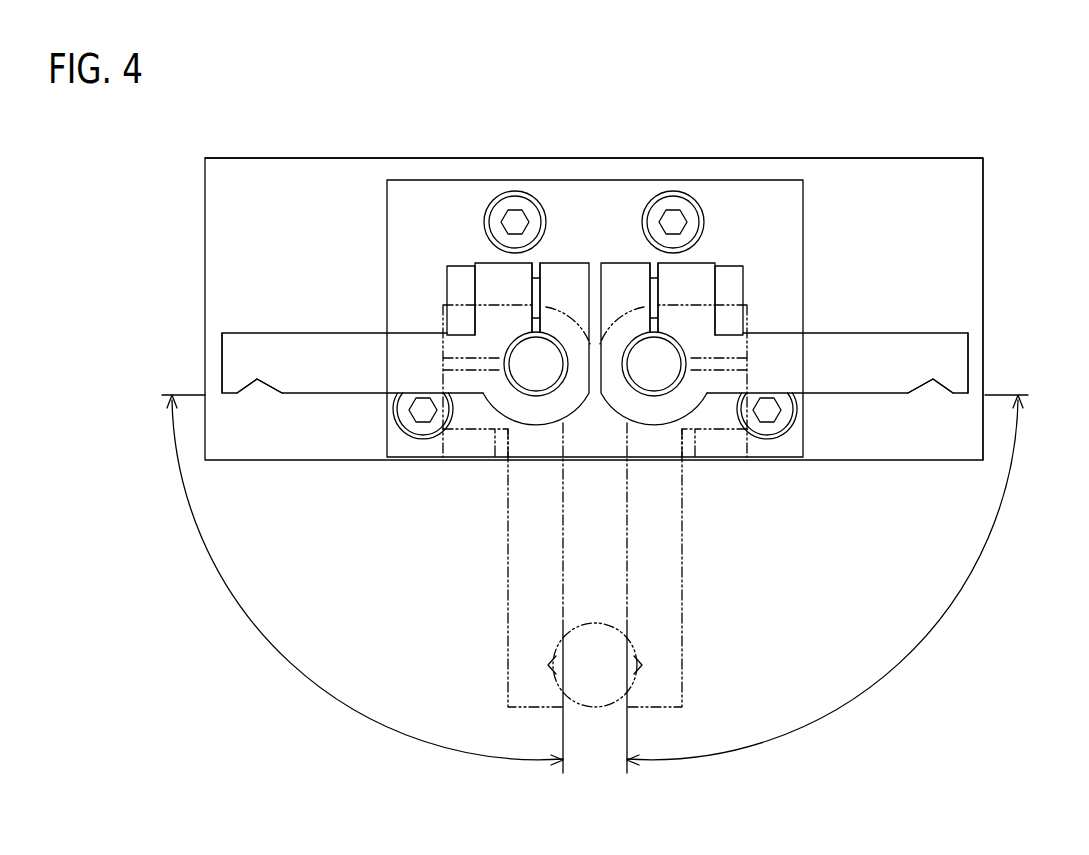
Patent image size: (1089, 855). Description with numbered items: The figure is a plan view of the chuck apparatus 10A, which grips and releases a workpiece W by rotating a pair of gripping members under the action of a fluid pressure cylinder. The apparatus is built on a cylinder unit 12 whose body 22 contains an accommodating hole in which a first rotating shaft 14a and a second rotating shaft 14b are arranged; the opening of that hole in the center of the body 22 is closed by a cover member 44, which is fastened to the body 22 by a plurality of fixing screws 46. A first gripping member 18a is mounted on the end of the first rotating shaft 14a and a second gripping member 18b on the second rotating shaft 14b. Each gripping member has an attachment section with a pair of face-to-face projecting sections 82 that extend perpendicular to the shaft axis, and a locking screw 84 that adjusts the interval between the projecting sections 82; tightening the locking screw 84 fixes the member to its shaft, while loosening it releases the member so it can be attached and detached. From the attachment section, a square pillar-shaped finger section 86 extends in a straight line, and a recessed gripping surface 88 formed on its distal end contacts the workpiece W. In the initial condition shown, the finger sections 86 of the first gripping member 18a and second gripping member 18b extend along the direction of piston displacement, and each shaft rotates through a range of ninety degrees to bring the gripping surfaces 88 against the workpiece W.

The chuck apparatus 10A is at (253, 106).
The cylinder unit 12 is at (914, 156).
The body 22 is at (868, 172).
The cover member 44 is at (769, 195).
The fixing screws 46 is at (672, 208).
The first rotating shaft 14a is at (650, 377).
The second rotating shaft 14b is at (540, 377).
The first gripping member 18a is at (898, 331).
The second gripping member 18b is at (292, 331).
The projecting sections 82 is at (487, 277).
The locking screw 84 is at (463, 300).
The finger section 86 is at (222, 359).
The gripping surface 88 is at (249, 387).
The workpiece W is at (595, 707).